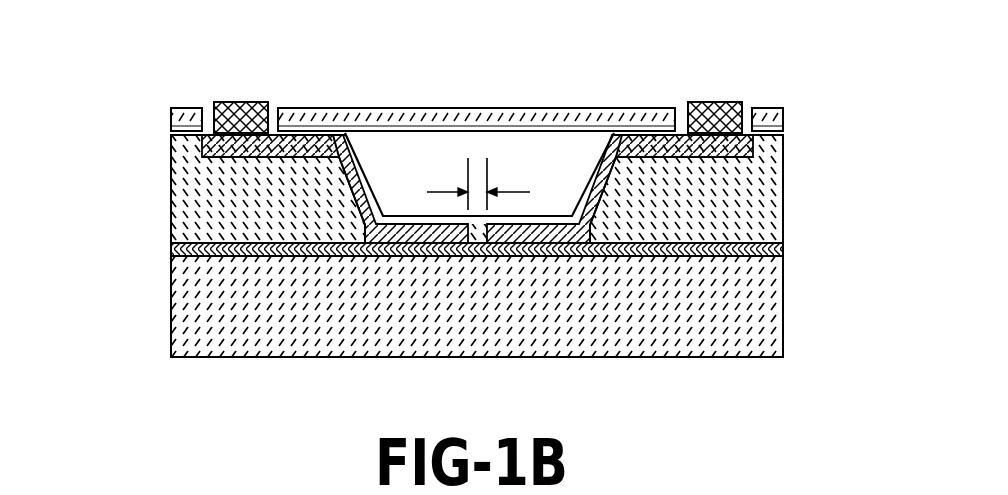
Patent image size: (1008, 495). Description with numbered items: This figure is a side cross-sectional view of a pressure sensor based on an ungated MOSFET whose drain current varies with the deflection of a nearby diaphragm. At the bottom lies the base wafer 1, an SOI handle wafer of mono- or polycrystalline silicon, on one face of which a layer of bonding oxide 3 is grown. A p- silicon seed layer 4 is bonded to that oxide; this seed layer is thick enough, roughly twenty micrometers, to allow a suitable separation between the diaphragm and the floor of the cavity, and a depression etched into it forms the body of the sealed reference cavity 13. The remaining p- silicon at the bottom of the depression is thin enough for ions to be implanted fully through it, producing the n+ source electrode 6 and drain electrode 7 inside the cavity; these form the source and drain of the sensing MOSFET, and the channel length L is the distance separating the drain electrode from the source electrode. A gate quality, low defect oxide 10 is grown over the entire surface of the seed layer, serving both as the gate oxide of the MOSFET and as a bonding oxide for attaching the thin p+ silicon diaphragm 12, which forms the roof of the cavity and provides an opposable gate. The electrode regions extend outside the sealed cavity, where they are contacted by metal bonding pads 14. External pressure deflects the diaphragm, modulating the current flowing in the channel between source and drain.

The base wafer 1 is at (653, 338).
The bonding oxide 3 is at (775, 252).
The p- silicon seed layer 4 is at (770, 202).
The source electrode 6 is at (753, 150).
The drain electrode 7 is at (217, 163).
The gate oxide 10 is at (177, 135).
The p+ silicon diaphragm 12 is at (182, 108).
The reference cavity 13 is at (533, 150).
The metal bonding pads 14 is at (242, 105).
The channel length L is at (470, 157).